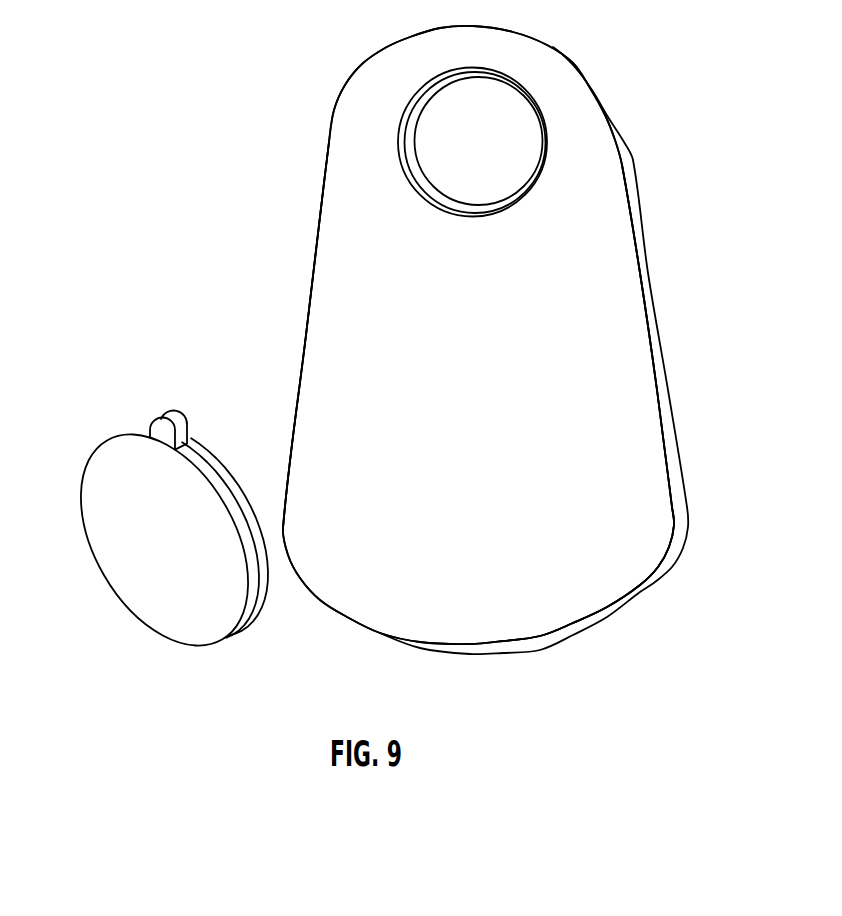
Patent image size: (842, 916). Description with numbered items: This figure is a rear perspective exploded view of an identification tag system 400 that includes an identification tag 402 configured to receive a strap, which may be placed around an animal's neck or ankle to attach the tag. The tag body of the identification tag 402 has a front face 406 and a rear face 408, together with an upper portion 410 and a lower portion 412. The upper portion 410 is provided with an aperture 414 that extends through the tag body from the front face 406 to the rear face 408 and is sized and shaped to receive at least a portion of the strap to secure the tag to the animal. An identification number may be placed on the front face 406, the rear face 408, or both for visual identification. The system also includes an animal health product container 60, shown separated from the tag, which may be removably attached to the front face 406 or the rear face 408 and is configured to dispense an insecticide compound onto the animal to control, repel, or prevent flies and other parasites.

The identification tag system 400 is at (177, 101).
The identification tag 402 is at (312, 259).
The front face 406 is at (649, 273).
The rear face 408 is at (307, 312).
The upper portion 410 is at (633, 146).
The lower portion 412 is at (685, 485).
The aperture 414 is at (526, 194).
The animal health product container 60 is at (95, 554).